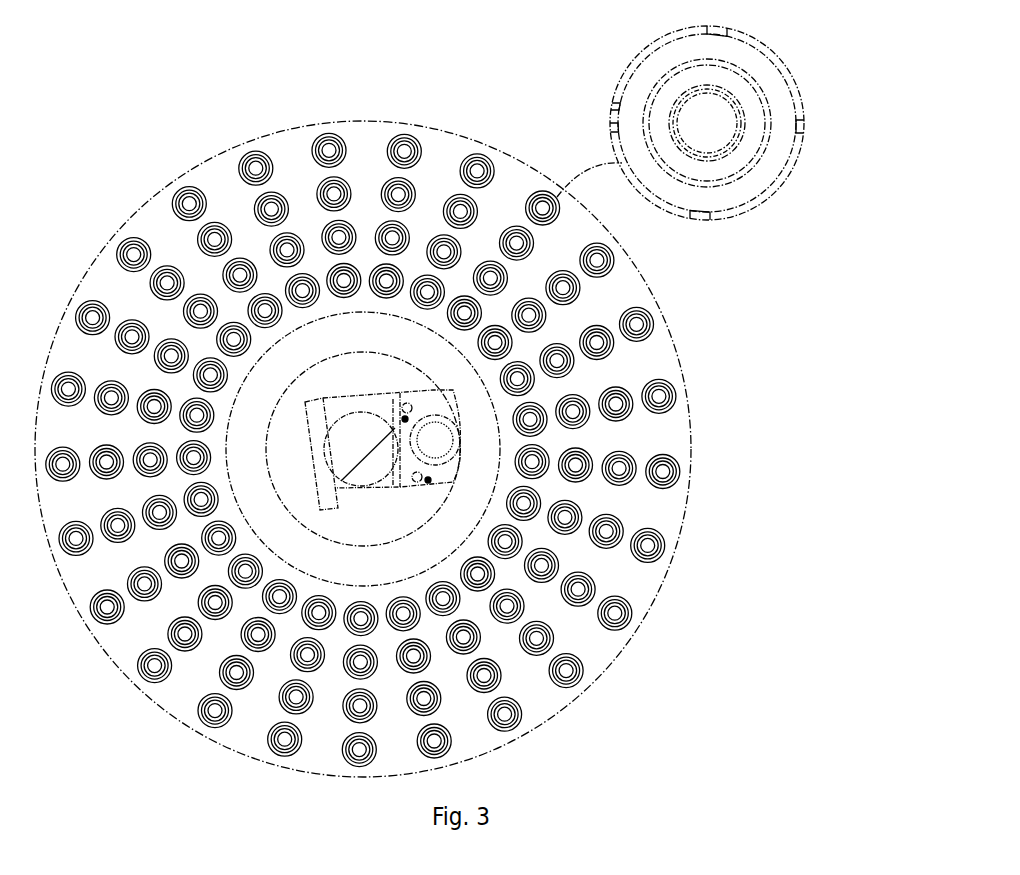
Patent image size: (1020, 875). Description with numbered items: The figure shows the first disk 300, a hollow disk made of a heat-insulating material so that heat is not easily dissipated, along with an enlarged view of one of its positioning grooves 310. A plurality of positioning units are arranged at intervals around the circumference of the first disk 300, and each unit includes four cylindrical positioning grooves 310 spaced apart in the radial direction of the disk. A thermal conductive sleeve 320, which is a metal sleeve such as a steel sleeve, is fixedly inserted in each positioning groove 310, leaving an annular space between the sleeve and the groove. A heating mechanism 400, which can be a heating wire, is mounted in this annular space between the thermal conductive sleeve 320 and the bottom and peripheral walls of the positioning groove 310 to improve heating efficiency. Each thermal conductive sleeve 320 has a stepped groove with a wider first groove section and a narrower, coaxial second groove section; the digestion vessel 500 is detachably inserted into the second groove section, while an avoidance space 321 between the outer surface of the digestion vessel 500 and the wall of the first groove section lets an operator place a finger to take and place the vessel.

The first disk 300 is at (647, 585).
The positioning groove 310 is at (797, 101).
The thermal conductive sleeve 320 is at (772, 180).
The avoidance space 321 is at (700, 170).
The heating mechanism 400 is at (803, 128).
The digestion vessel 500 is at (707, 117).